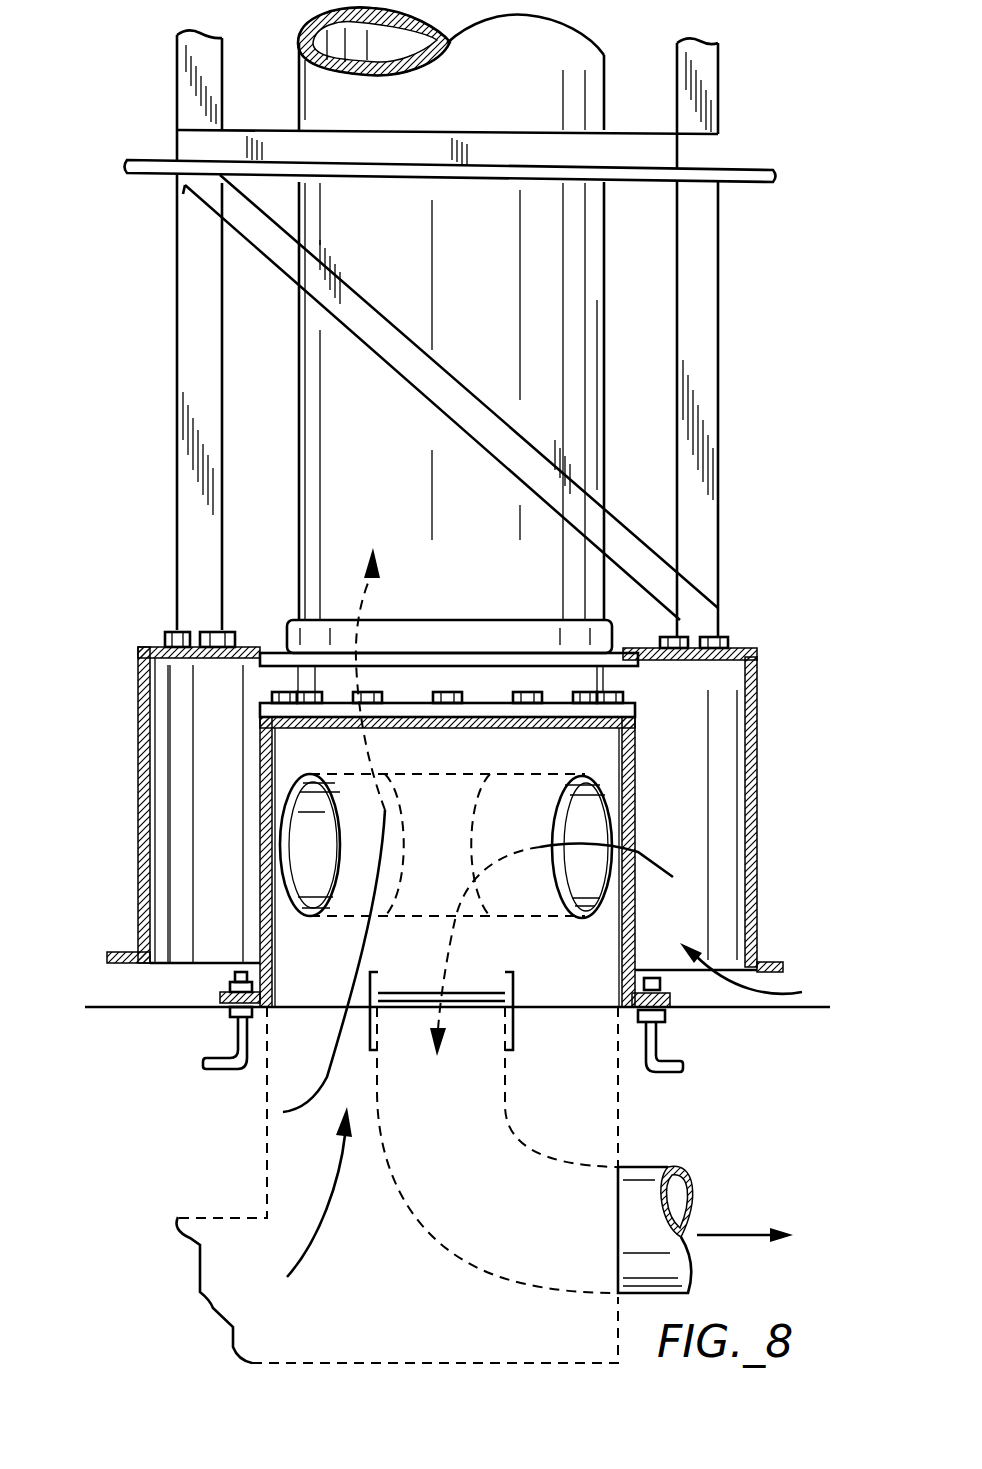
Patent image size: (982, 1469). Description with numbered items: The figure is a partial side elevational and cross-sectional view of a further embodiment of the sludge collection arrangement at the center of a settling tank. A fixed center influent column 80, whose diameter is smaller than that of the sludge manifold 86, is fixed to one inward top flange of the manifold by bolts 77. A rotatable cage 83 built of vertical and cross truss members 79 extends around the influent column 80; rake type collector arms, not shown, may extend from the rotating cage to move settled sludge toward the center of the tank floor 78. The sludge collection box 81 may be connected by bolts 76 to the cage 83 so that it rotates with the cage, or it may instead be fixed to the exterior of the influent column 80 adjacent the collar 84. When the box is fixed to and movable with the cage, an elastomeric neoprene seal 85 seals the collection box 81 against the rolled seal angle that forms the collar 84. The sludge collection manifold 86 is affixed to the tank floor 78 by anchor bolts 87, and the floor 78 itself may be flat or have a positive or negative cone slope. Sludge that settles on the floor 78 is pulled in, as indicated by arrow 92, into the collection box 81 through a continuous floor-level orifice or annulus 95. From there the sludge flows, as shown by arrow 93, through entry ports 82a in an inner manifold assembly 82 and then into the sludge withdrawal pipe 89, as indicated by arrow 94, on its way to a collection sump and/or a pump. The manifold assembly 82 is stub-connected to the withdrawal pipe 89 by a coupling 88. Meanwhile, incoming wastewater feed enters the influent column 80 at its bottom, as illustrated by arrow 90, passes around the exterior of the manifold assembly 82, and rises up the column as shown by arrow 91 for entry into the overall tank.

The bolts 76 is at (168, 630).
The bolts 77 is at (597, 683).
The tank floor 78 is at (810, 1010).
The vertical and cross truss members 79 is at (687, 196).
The center influent column 80 is at (606, 298).
The sludge collection box 81 is at (757, 707).
The inner manifold assembly 82 is at (635, 815).
The entry ports 82a is at (300, 858).
The rotatable cage 83 is at (718, 80).
The collar 84 is at (497, 620).
The elastomeric neoprene seal 85 is at (268, 650).
The sludge manifold 86 is at (258, 752).
The anchor bolts 87 is at (672, 1078).
The coupling 88 is at (283, 1112).
The sludge withdrawal pipe 89 is at (648, 1167).
The arrow 90 is at (305, 1243).
The arrow 91 is at (353, 592).
The arrow 92 is at (802, 992).
The arrow 93 is at (638, 852).
The arrow 94 is at (725, 1233).
The floor-level orifice or annulus 95 is at (127, 966).